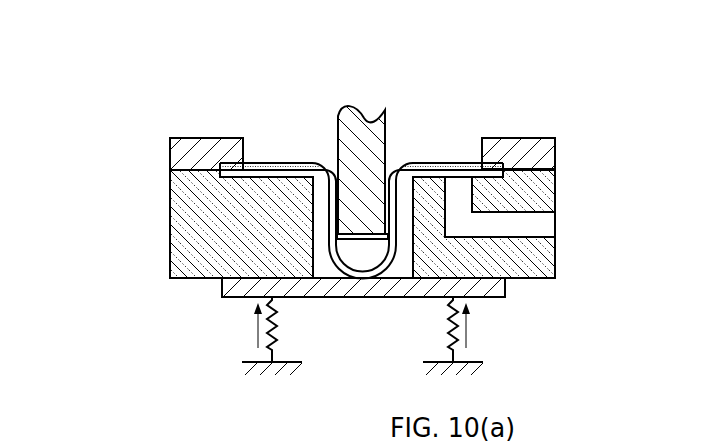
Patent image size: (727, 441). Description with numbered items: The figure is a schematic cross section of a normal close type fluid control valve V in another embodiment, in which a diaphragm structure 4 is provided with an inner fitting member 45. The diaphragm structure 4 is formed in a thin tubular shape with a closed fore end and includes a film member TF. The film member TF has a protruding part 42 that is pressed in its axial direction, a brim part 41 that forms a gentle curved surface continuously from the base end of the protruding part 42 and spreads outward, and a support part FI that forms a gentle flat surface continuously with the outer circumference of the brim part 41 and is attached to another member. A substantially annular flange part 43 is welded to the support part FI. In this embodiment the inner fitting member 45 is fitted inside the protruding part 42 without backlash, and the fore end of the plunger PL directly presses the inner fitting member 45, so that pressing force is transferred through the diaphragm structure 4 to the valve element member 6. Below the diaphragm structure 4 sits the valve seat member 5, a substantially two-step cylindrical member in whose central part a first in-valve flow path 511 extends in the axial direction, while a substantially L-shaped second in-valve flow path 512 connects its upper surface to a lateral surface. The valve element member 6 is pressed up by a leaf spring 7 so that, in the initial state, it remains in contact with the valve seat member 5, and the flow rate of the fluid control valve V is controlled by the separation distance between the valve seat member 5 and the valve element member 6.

The diaphragm structure 4 is at (406, 127).
The brim part 41 is at (277, 163).
The protruding part 42 is at (338, 213).
The flange part 43 is at (170, 152).
The inner fitting member 45 is at (388, 237).
The valve seat member 5 is at (170, 225).
The first in-valve flow path 511 is at (330, 255).
The second in-valve flow path 512 is at (500, 227).
The valve element member 6 is at (222, 285).
The leaf spring 7 is at (275, 328).
The plunger PL is at (363, 108).
The film member TF is at (304, 142).
The support part FI is at (226, 160).
The fluid control valve V is at (550, 80).